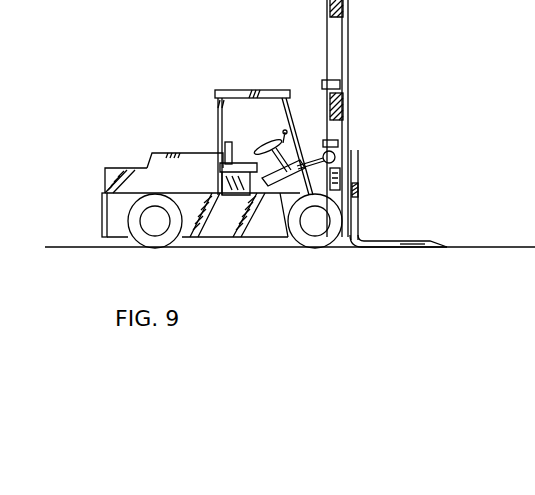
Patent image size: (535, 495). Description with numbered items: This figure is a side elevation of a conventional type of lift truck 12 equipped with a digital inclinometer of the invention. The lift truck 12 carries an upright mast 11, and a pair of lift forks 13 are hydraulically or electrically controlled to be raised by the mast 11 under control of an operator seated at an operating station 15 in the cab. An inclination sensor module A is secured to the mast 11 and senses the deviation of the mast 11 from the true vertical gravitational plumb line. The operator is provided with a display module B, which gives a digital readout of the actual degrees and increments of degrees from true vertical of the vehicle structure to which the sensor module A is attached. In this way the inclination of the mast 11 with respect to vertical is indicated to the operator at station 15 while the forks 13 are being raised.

The mast 11 is at (337, 33).
The lift truck 12 is at (136, 152).
The lift forks 13 is at (378, 243).
The operating station 15 is at (242, 143).
The inclination sensor module A is at (340, 180).
The display module B is at (303, 163).